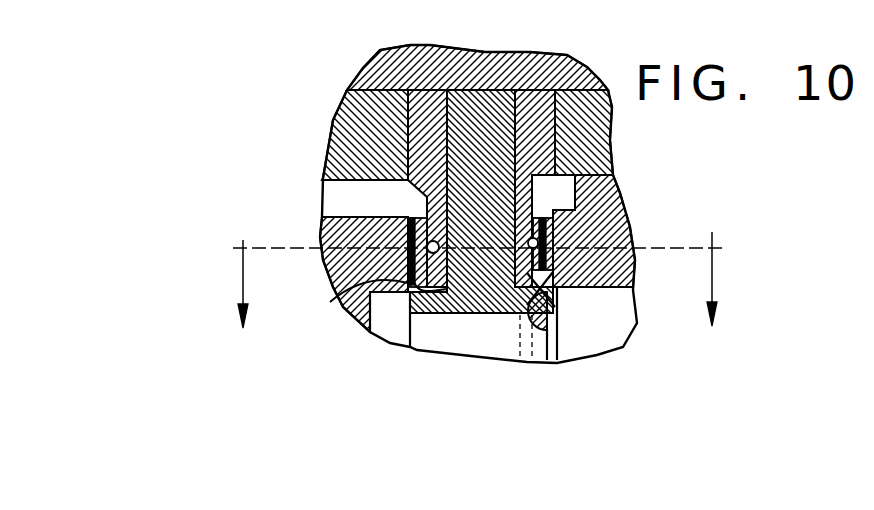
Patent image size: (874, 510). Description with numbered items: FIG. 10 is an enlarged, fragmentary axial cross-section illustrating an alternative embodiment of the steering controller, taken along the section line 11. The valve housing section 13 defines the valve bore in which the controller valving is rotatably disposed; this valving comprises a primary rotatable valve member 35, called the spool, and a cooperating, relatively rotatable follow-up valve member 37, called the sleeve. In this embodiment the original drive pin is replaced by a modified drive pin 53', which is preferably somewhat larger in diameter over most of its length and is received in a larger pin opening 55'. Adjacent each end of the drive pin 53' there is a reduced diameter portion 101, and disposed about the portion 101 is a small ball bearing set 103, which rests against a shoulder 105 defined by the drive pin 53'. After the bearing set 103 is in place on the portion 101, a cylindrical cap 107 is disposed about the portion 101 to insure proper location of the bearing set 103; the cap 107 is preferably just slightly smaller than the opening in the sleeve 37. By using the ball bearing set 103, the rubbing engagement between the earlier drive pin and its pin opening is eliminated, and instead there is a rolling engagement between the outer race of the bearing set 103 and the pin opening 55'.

The section line 11 is at (239, 220).
The valve housing section 13 is at (383, 70).
The reduced diameter portion 101 is at (490, 110).
The cylindrical cap 107 is at (418, 112).
The follow-up valve member 37 is at (583, 135).
The primary rotatable valve member 35 is at (590, 203).
The ball bearing set 103 is at (414, 208).
The shoulder 105 is at (345, 297).
The modified drive pin 53' is at (415, 339).
The pin opening 55' is at (565, 323).